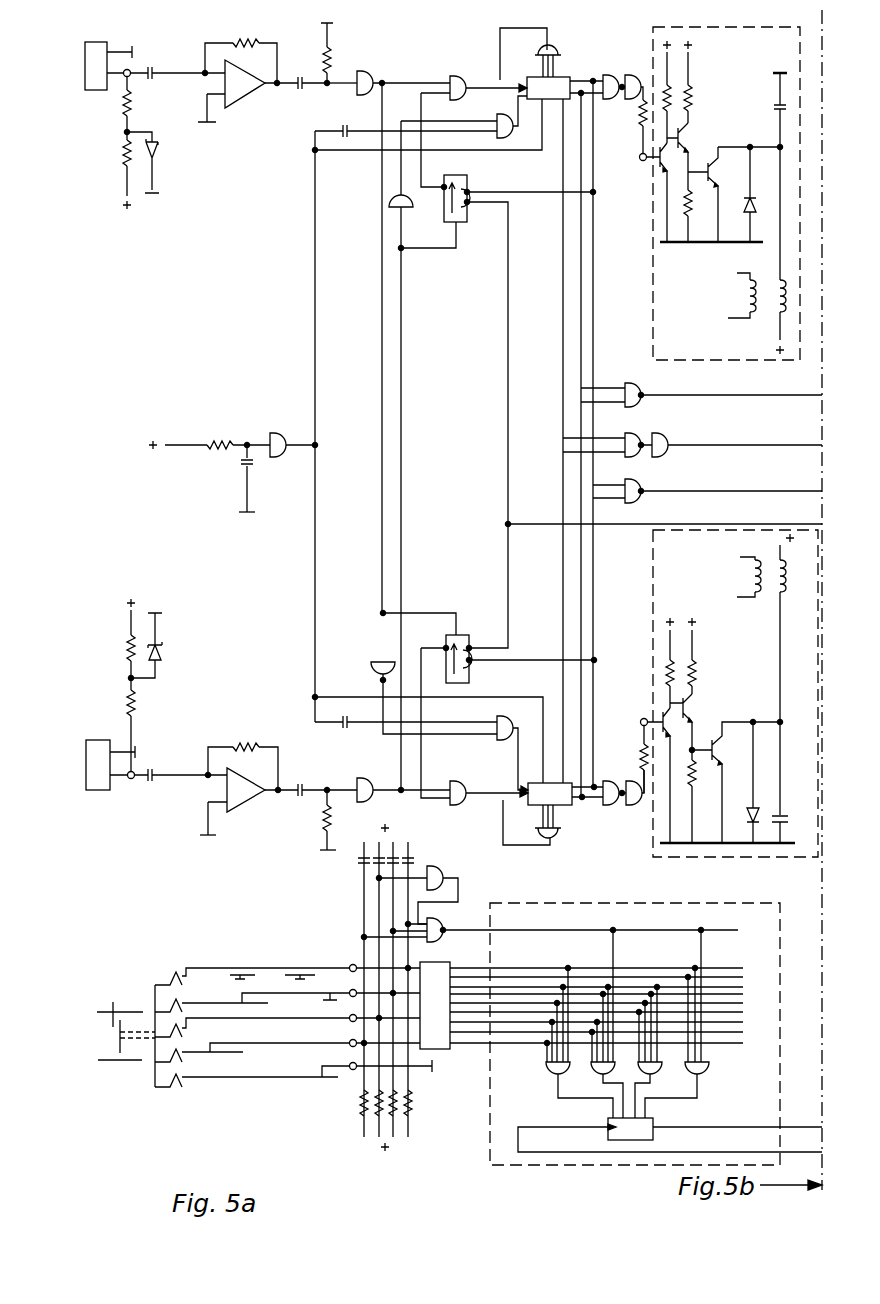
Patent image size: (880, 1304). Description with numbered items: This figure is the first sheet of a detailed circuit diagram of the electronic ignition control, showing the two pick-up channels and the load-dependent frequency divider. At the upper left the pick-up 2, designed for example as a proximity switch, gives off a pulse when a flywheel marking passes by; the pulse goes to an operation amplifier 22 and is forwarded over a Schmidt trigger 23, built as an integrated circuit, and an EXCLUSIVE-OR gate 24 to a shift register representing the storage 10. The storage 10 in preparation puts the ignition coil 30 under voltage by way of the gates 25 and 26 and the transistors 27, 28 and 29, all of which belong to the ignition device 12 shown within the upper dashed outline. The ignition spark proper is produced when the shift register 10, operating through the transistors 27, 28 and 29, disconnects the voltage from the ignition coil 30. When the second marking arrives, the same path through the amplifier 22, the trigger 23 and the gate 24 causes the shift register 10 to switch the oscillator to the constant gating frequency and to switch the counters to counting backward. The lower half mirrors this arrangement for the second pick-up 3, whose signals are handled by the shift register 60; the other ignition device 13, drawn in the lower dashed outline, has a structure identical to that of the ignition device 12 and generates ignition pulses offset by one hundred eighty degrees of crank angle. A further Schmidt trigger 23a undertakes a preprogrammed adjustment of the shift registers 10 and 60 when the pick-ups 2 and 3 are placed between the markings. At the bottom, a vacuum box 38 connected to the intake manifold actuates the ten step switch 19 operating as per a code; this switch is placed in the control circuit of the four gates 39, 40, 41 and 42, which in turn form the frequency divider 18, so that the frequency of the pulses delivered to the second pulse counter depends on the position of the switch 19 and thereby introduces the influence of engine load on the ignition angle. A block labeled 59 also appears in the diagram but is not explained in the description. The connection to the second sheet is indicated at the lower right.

The pick-up 2 is at (92, 52).
The second pick-up 3 is at (92, 752).
The storage 10 is at (535, 79).
The ignition device 12 is at (706, 193).
The other ignition device 13 is at (672, 565).
The frequency divider 18 is at (656, 1015).
The ten step switch 19 is at (225, 962).
The operation amplifier 22 is at (236, 92).
The Schmidt trigger 23 is at (345, 78).
The Schmidt trigger 23a is at (232, 458).
The EXCLUSIVE-OR gate 24 is at (465, 75).
The gate 25 is at (612, 75).
The gate 26 is at (644, 76).
The transistor 27 is at (662, 163).
The transistor 28 is at (685, 142).
The transistor 29 is at (713, 172).
The ignition coil 30 is at (750, 312).
The vacuum box 38 is at (126, 1020).
The gate 39 is at (707, 1072).
The gate 40 is at (656, 1078).
The gate 41 is at (599, 1078).
The gate 42 is at (548, 1072).
The monostable stage 59 is at (469, 186).
The shift register 60 is at (568, 800).